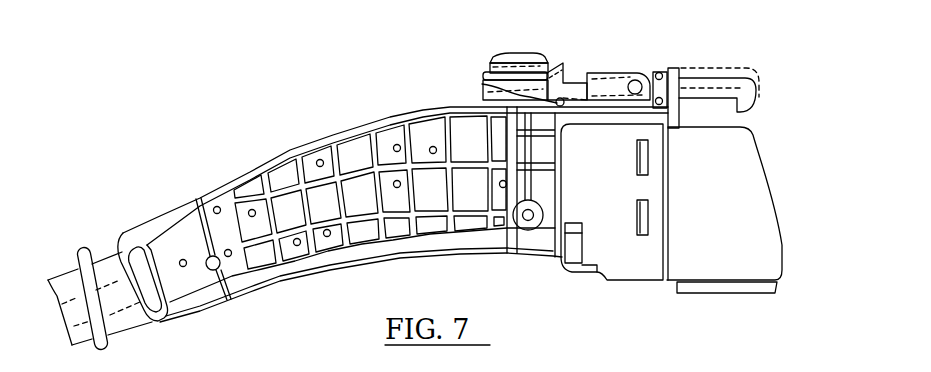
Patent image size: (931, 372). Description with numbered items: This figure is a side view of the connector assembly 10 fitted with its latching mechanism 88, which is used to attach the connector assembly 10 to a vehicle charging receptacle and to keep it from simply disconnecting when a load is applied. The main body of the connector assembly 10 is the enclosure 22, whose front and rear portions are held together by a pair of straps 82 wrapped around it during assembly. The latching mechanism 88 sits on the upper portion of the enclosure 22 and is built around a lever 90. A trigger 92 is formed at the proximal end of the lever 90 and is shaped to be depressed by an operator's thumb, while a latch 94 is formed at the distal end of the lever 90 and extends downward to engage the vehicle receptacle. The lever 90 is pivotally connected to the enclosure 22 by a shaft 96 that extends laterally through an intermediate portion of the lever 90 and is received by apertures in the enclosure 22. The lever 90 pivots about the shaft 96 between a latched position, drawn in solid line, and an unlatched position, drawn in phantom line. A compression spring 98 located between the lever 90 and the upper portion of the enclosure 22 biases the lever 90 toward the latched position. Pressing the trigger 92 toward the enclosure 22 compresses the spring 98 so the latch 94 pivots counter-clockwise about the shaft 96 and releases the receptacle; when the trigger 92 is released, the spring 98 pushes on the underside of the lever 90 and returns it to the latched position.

The connector assembly 10 is at (186, 106).
The enclosure 22 is at (331, 133).
The straps 82 is at (229, 300).
The latching mechanism 88 is at (450, 60).
The lever 90 is at (571, 86).
The trigger 92 is at (513, 52).
The latch 94 is at (756, 97).
The shaft 96 is at (636, 80).
The compression spring 98 is at (482, 84).